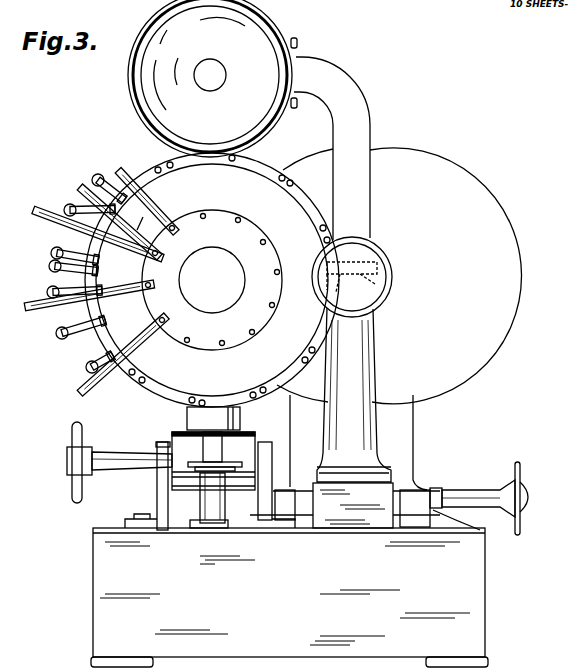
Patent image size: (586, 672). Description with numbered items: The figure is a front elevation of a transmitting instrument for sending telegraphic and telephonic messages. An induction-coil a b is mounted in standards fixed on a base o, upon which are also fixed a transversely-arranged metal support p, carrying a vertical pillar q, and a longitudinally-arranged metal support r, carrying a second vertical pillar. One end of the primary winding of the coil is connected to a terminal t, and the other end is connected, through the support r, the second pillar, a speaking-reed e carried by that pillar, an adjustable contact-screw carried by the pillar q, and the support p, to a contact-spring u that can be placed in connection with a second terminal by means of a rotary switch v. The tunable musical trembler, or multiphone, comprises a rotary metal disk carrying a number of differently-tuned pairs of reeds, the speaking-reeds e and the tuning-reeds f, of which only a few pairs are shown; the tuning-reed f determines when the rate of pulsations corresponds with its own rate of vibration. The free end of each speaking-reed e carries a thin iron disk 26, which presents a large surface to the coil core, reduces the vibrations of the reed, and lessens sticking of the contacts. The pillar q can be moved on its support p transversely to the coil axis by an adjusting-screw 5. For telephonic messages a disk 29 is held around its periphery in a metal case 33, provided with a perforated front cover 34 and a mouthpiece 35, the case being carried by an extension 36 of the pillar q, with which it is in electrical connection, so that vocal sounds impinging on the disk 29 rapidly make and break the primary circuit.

The metal case 33 is at (270, 24).
The mouthpiece 35 is at (138, 98).
The perforated front cover 34 is at (210, 75).
The disk 29 is at (210, 60).
The extension 36 is at (332, 148).
The induction-coil ab is at (399, 276).
The speaking-reed e is at (208, 281).
The tuning-reed f is at (53, 256).
The thin iron disk 26 is at (100, 168).
The vertical pillar q is at (353, 418).
The adjusting-screw 5 is at (187, 418).
The rotary switch v is at (213, 461).
The contact-spring u is at (217, 457).
The terminal t is at (209, 500).
The longitudinally-arranged metal support r is at (194, 500).
The transversely-arranged metal support p is at (420, 500).
The base o is at (289, 597).